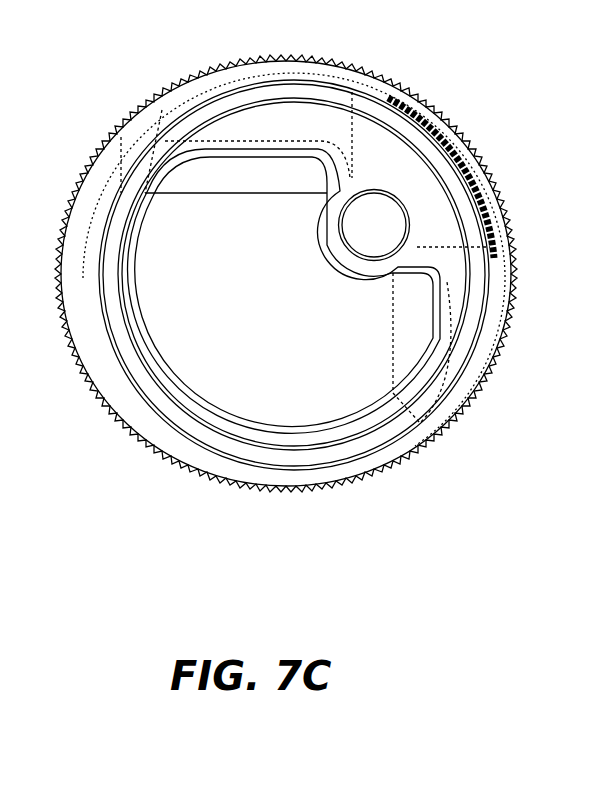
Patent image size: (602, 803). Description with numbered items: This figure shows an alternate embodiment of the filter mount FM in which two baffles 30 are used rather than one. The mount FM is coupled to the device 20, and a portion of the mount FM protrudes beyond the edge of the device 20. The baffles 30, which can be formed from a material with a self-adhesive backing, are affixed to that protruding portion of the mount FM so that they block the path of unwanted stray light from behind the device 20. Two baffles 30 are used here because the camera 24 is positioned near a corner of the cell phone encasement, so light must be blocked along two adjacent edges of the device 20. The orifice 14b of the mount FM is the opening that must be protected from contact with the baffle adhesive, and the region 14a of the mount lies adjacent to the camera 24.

The filter mount FM is at (225, 63).
The baffle 30 is at (330, 98).
The camera 24 is at (350, 230).
The boss / raised portion 14a is at (350, 245).
The device 20 is at (232, 388).
The orifice 14b is at (162, 347).